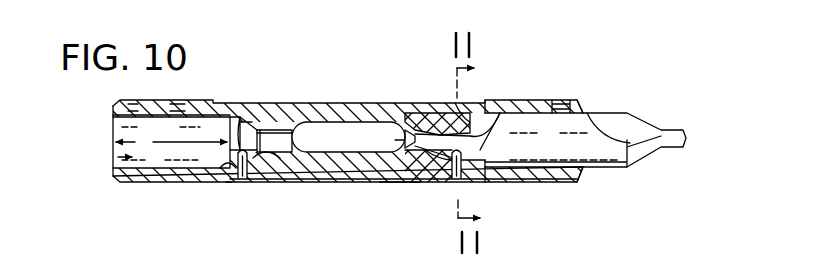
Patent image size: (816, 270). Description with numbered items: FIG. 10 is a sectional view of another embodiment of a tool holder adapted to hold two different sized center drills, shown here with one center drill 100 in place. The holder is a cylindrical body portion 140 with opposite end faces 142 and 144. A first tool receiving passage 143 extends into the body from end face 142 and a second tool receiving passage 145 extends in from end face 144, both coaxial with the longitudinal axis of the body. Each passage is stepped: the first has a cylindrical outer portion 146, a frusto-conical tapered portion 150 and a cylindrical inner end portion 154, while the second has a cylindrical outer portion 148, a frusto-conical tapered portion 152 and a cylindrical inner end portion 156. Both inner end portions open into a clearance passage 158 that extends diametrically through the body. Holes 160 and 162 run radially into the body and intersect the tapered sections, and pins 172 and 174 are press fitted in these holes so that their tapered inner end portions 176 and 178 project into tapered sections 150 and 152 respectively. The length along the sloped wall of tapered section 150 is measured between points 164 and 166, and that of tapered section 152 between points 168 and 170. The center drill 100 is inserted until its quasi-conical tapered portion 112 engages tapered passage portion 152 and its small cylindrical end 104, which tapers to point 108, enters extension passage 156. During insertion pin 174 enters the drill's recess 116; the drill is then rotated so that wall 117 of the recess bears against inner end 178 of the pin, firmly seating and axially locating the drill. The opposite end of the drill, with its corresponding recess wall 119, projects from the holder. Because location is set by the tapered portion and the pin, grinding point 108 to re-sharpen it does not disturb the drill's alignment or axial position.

The center drill 100 is at (612, 168).
The cylindrical end 104 is at (432, 126).
The point 108 is at (400, 143).
The tapered portion 112 is at (405, 180).
The recess 116 is at (497, 138).
The wall 117 is at (497, 160).
The wall 119 is at (652, 134).
The cylindrical body portion 140 is at (340, 182).
The end face 142 is at (113, 115).
The first tool receiving passage 143 is at (118, 157).
The end face 144 is at (587, 111).
The second tool receiving passage 145 is at (588, 173).
The cylindrical outer portion 146 is at (160, 162).
The cylindrical outer portion 148 is at (554, 184).
The frusto-conical tapered portion 150 is at (246, 132).
The frusto-conical tapered portion 152 is at (473, 112).
The cylindrical inner end portion 154 is at (282, 137).
The cylindrical inner end portion 156 is at (408, 130).
The clearance passage 158 is at (352, 124).
The hole 160 is at (230, 182).
The hole 162 is at (424, 173).
The point 164 is at (228, 163).
The point 166 is at (268, 180).
The point 168 is at (484, 150).
The point 170 is at (445, 112).
The pin 172 is at (246, 172).
The pin 174 is at (437, 172).
The tapered inner end portion 176 is at (233, 138).
The tapered inner end portion 178 is at (464, 162).